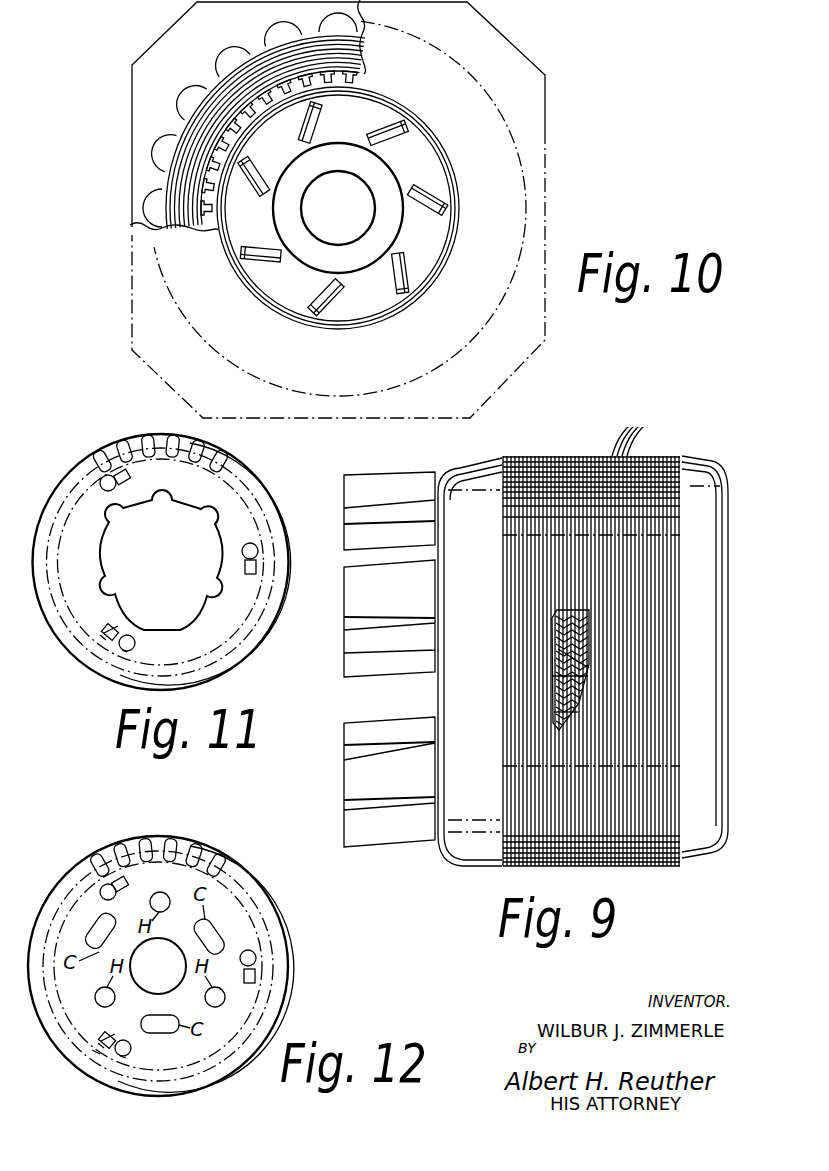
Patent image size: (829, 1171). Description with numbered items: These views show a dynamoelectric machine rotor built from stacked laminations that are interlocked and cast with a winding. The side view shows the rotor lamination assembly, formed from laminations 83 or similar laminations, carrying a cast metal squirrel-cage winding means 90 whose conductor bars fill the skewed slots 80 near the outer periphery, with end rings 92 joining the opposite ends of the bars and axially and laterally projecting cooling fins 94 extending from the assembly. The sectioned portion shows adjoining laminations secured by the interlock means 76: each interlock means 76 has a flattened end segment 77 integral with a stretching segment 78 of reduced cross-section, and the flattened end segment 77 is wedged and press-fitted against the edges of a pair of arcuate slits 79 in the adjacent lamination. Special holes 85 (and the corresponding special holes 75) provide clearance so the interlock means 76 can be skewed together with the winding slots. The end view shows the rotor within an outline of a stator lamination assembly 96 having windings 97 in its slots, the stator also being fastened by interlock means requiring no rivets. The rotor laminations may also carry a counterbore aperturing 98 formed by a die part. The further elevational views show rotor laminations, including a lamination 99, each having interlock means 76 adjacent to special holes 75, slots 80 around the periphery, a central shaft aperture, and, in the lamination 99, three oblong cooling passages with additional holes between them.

In FIG. 11, the special holes 75 is at (112, 490).
In FIG. 12, the special holes 75 is at (104, 898).
In FIG. 9, the interlock means 76 is at (553, 690).
In FIG. 11, the interlock means 76 is at (130, 478).
In FIG. 12, the interlock means 76 is at (128, 884).
In FIG. 9, the flattened end segment 77 is at (560, 677).
In FIG. 11, the flattened end segment 77 is at (124, 653).
In FIG. 12, the flattened end segment 77 is at (125, 1058).
In FIG. 11, the stretching segment 78 is at (103, 635).
In FIG. 12, the stretching segment 78 is at (100, 1043).
In FIG. 9, the arcuate slits 79 is at (562, 712).
In FIG. 11, the arcuate slits 79 is at (115, 626).
In FIG. 12, the arcuate slits 79 is at (112, 1036).
In FIG. 11, the slots 80 is at (146, 441).
In FIG. 12, the slots 80 is at (158, 858).
In FIG. 9, the laminations 83 is at (627, 431).
In FIG. 9, the special holes 85 is at (557, 652).
In FIG. 9, the cast metal squirrel-cage winding means 90 is at (481, 462).
In FIG. 10, the end rings 92 is at (445, 168).
In FIG. 9, the end rings 92 is at (484, 858).
In FIG. 10, the cooling fins 94 is at (443, 214).
In FIG. 9, the cooling fins 94 is at (350, 604).
In FIG. 10, the stator lamination assembly 96 is at (170, 35).
In FIG. 10, the windings 97 is at (218, 87).
In FIG. 11, the counterbore aperturing 98 is at (203, 607).
In FIG. 12, the lamination 99 is at (95, 1052).